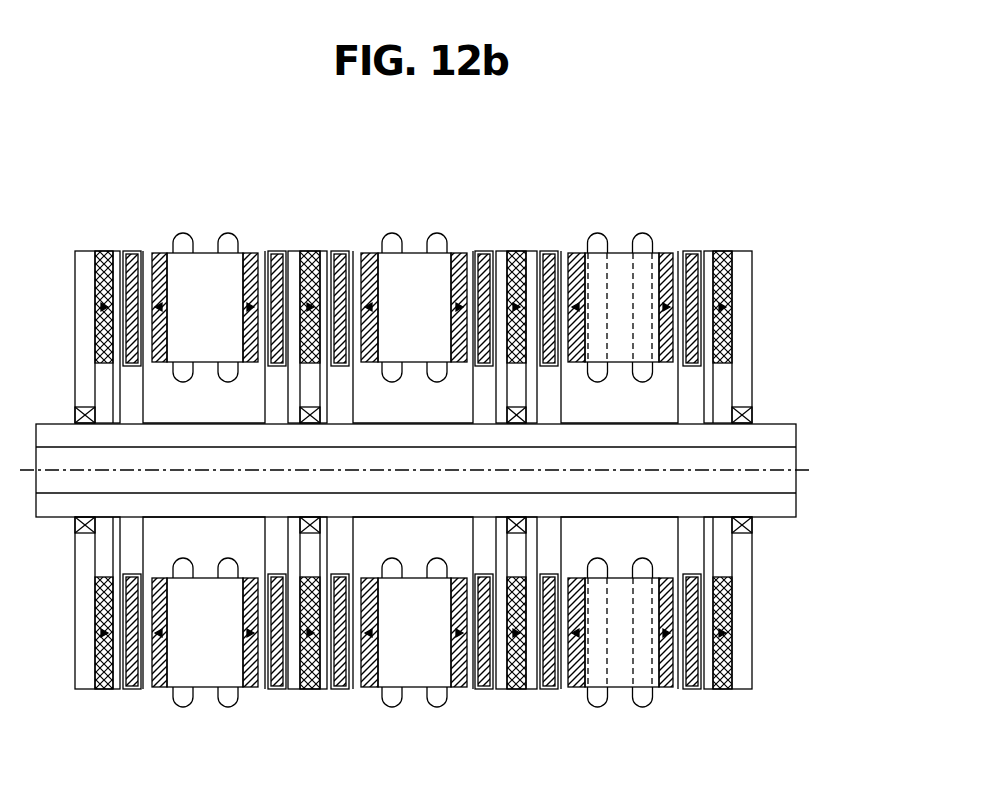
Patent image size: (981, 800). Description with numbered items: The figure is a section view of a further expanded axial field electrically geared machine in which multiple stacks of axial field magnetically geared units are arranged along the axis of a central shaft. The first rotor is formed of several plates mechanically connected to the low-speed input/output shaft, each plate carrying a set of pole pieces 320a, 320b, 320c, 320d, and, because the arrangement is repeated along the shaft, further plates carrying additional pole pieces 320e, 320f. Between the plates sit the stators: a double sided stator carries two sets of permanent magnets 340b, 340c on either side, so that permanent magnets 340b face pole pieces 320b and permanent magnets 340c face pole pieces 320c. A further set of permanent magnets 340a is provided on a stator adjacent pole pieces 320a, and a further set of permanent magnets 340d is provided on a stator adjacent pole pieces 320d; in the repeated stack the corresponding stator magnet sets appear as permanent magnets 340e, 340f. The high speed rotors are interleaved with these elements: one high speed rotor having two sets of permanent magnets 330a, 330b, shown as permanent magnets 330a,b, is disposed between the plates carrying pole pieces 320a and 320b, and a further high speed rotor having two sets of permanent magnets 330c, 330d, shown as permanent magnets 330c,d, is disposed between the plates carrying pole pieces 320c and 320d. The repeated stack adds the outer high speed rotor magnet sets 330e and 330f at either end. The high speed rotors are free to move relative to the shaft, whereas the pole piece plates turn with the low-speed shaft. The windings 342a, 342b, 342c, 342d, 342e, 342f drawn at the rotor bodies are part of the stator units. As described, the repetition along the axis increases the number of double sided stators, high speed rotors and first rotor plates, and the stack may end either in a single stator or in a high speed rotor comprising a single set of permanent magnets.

The pole pieces 320a is at (547, 258).
The pole pieces 320b is at (487, 258).
The pole pieces 320c is at (338, 257).
The pole pieces 320d is at (277, 257).
The pole pieces 320e is at (133, 257).
The pole pieces 320f is at (700, 258).
The housing frame 330e is at (102, 687).
The permanent magnets of high speed rotor 330c,d is at (304, 506).
The permanent magnets 330c is at (304, 506).
The permanent magnets 330d is at (308, 690).
The permanent magnets of high speed rotor 330a,b is at (511, 506).
The permanent magnets 330a is at (511, 506).
The permanent magnets 330b is at (515, 688).
The housing frame 330f is at (718, 688).
The permanent magnets 340a is at (577, 258).
The permanent magnets 340b is at (457, 258).
The permanent magnets 340c is at (367, 257).
The permanent magnets 340d is at (248, 257).
The rotor magnet 340e is at (162, 256).
The rotor magnet 340f is at (667, 258).
The winding 342a is at (593, 703).
The winding 342b is at (437, 703).
The winding 342c is at (388, 703).
The winding 342d is at (223, 703).
The winding 342e is at (178, 703).
The winding 342f is at (640, 703).